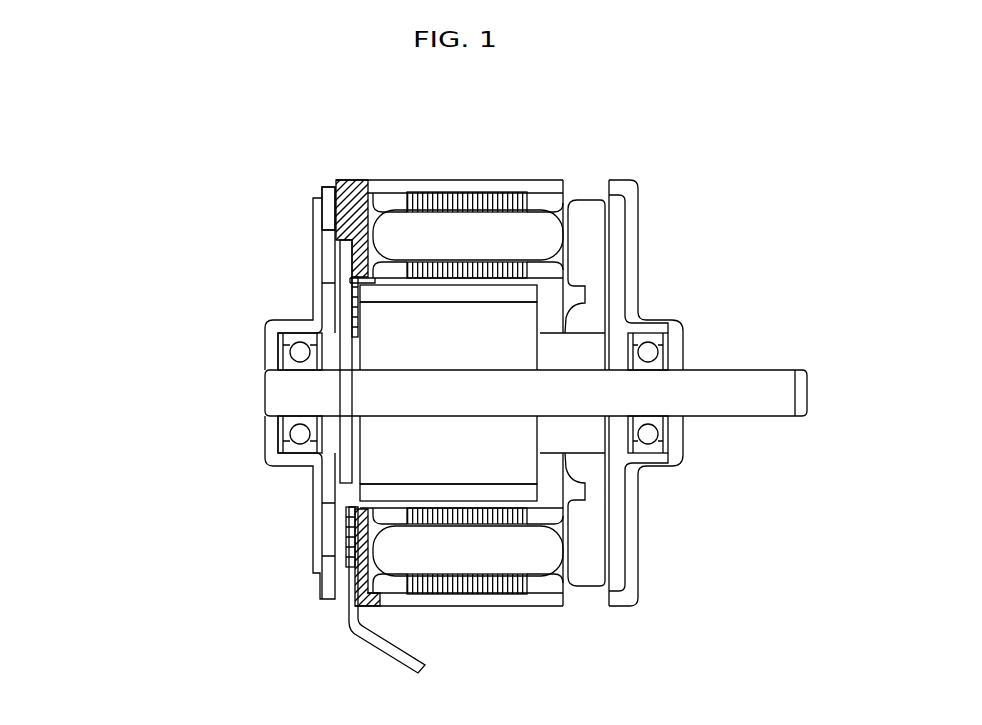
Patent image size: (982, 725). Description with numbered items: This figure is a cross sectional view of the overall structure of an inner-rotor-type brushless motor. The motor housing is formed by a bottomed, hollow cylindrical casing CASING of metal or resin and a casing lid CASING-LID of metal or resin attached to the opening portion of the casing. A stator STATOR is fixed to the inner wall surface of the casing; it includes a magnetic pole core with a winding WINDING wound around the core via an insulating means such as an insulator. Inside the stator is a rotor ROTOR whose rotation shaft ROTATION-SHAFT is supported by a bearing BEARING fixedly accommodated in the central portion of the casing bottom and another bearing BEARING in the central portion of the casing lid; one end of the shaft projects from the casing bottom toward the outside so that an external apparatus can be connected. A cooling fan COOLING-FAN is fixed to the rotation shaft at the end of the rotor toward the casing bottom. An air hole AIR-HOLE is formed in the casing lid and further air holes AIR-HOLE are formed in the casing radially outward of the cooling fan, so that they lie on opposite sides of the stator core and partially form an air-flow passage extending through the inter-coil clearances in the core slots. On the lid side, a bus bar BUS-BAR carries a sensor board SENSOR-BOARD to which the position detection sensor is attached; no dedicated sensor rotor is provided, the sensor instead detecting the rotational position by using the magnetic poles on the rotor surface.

The stator STATOR is at (422, 203).
The winding WINDING is at (447, 228).
The rotor ROTOR is at (478, 323).
The rotation shaft ROTATION-SHAFT is at (758, 405).
The cooling fan COOLING-FAN is at (595, 220).
The cylindrical casing CASING is at (627, 185).
The bearing BEARING is at (652, 347).
The casing lid CASING-LID is at (330, 583).
The air hole AIR-HOLE is at (587, 182).
The bus bar BUS-BAR is at (348, 192).
The sensor board SENSOR-BOARD is at (345, 303).